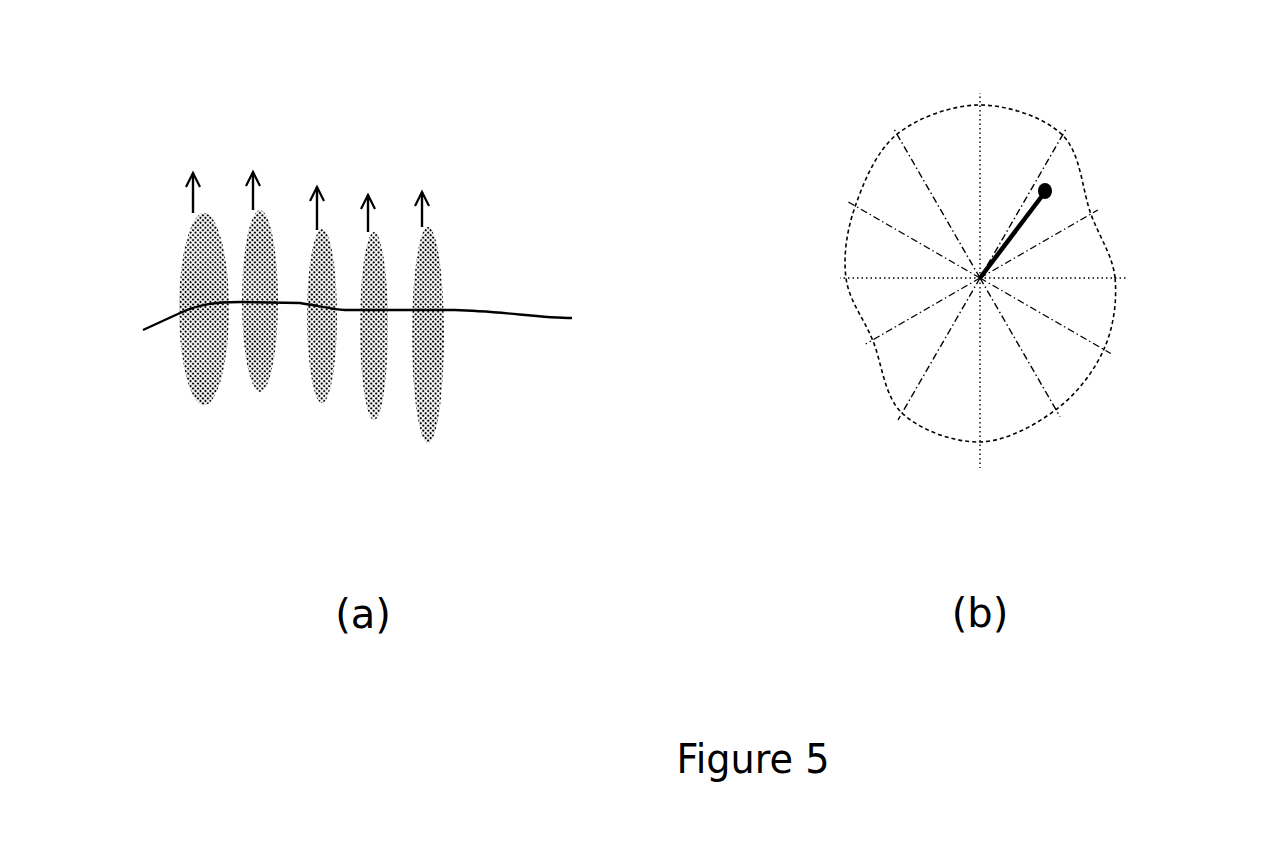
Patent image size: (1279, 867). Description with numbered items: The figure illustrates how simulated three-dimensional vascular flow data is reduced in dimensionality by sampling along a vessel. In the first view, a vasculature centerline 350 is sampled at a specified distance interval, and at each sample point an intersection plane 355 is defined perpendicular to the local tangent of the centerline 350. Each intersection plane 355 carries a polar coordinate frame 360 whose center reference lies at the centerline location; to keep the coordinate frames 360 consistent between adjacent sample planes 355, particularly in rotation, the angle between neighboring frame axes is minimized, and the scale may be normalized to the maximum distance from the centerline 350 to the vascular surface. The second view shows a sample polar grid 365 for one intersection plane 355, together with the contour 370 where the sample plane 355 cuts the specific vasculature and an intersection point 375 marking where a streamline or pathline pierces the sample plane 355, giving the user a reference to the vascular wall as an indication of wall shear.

In FIG. 5A, the centerline 350 is at (553, 290).
In FIG. 5A, the intersection plane 355 is at (337, 415).
In FIG. 5A, the coordinate frame 360 is at (267, 162).
In FIG. 5B, the polar grid 365 is at (1108, 432).
In FIG. 5B, the contour 370 is at (1110, 252).
In FIG. 5B, the intersection point 375 is at (1058, 182).